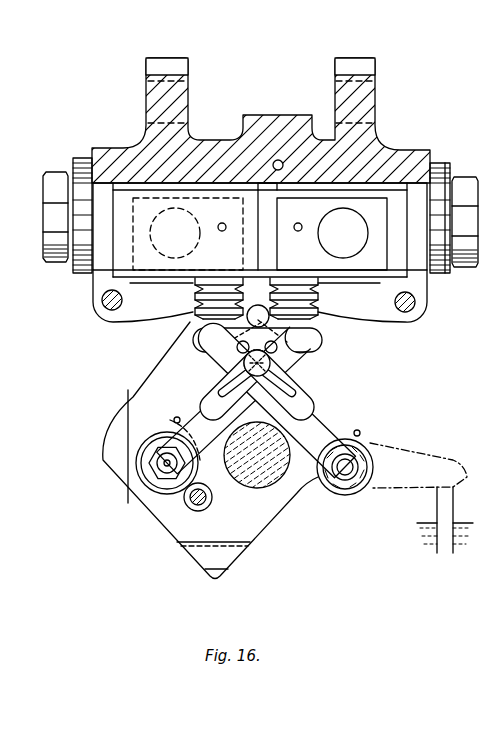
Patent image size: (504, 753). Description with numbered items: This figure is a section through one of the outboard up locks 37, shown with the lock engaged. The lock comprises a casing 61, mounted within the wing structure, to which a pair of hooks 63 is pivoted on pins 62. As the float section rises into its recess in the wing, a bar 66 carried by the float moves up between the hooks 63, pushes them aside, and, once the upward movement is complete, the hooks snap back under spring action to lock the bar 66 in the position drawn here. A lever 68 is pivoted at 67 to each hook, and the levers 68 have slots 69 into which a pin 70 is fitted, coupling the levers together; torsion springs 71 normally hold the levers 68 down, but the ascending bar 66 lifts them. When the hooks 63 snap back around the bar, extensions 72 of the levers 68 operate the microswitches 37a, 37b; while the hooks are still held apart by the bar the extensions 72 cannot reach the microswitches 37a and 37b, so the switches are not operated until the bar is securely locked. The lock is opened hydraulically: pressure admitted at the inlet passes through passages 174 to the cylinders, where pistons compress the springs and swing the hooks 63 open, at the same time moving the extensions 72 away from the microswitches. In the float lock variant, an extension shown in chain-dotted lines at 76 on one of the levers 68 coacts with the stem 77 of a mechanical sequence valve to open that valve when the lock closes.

The outboard up lock 37 is at (250, 94).
The passages 174 is at (281, 160).
The casing 61 is at (398, 150).
The pins 62 is at (253, 318).
The microswitch 37a is at (192, 320).
The microswitch 37b is at (343, 318).
The extensions of the levers 72 is at (203, 339).
The pin 70 is at (283, 362).
The slots 69 is at (223, 390).
The lever 68 is at (193, 398).
The torsion springs 71 is at (175, 419).
The pivot 67 is at (150, 470).
The bar 66 is at (288, 472).
The hook 63 is at (270, 533).
The extension 76 is at (453, 460).
The stem 77 is at (455, 506).